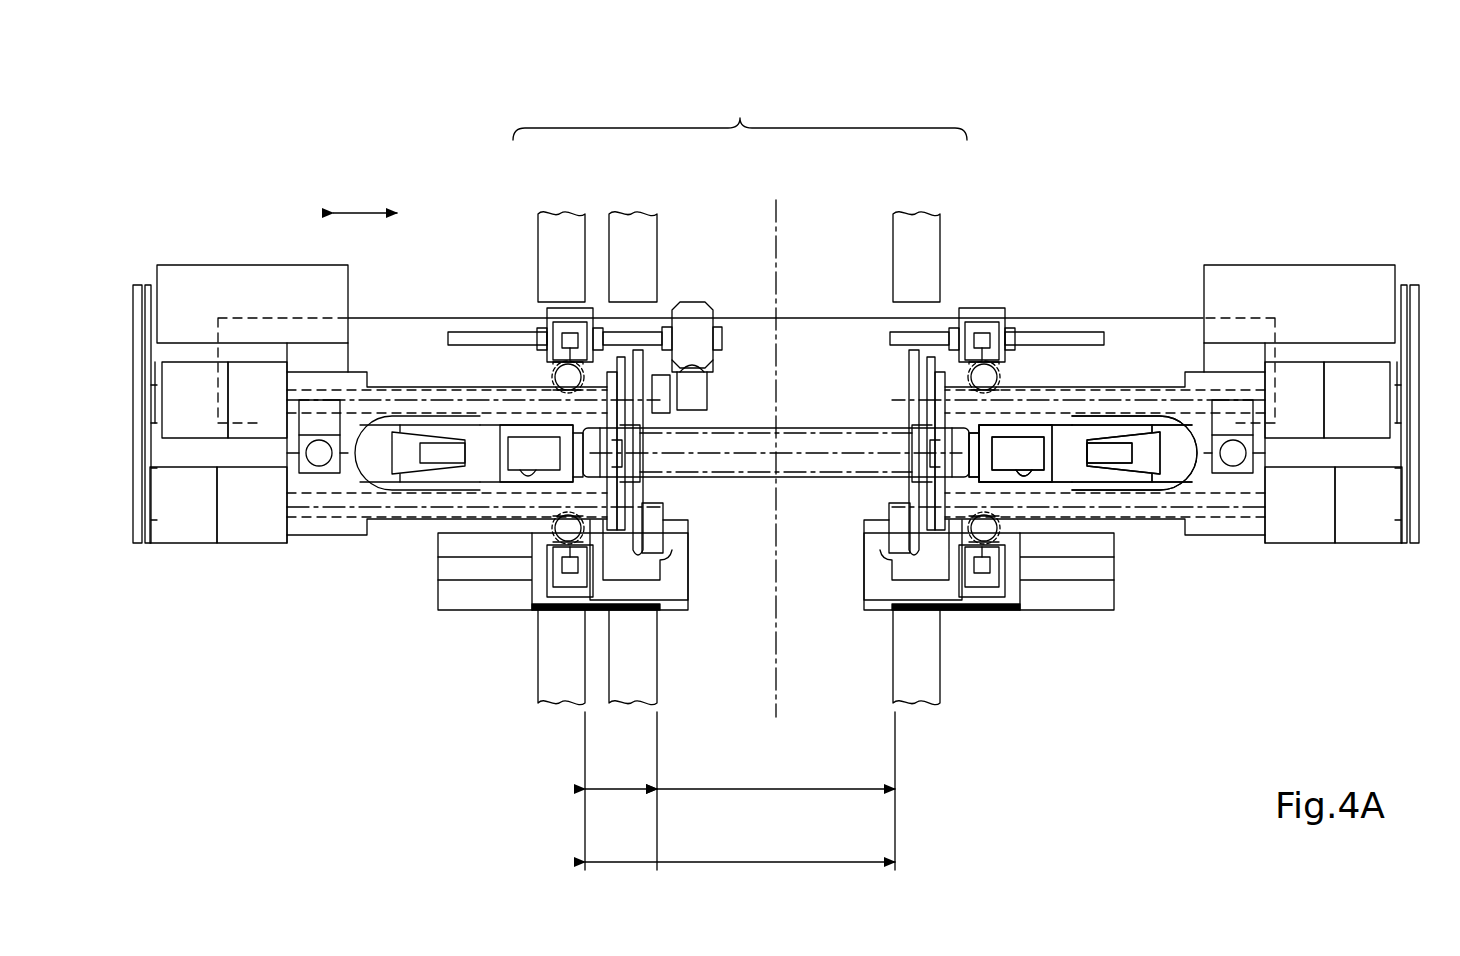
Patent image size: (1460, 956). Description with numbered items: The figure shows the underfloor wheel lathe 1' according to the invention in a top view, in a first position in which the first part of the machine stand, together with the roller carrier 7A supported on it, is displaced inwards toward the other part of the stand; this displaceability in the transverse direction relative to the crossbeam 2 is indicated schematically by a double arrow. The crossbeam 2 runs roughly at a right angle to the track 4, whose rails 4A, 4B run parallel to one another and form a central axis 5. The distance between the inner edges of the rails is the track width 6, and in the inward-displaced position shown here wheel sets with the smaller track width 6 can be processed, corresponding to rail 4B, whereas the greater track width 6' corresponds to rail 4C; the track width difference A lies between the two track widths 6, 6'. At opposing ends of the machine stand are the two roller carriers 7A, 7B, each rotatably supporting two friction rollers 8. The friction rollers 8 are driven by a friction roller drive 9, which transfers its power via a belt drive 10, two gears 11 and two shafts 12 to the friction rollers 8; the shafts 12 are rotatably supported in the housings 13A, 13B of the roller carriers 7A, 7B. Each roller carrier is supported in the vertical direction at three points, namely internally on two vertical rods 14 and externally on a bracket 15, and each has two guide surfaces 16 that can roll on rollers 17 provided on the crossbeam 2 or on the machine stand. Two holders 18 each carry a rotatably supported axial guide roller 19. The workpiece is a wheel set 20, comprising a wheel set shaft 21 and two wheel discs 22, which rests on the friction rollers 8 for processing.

The underfloor wheel lathe 1' is at (1245, 73).
The crossbeam 2 is at (393, 333).
The track 4 is at (740, 118).
The rail 4A is at (917, 227).
The rail 4B is at (633, 227).
The rail 4C is at (561, 227).
The central axis 5 is at (776, 228).
The track width 6 is at (740, 791).
The track width 6' is at (740, 837).
The track width difference A is at (623, 787).
The roller carrier 7A is at (326, 555).
The roller carrier 7B is at (1136, 555).
The friction rollers 8 is at (628, 440).
The friction roller drive 9 is at (205, 283).
The belt drive 10 is at (150, 365).
The gears 11 is at (195, 415).
The shafts 12 is at (418, 395).
The housing 13A is at (347, 483).
The housing 13B is at (1207, 483).
The vertical rods 14 is at (560, 378).
The bracket 15 is at (320, 460).
The guide surfaces 16 is at (993, 362).
The rollers 17 is at (980, 333).
The holders 18 is at (692, 305).
The axial guide roller 19 is at (660, 393).
The wheel set 20 is at (790, 425).
The wheel set shaft 21 is at (826, 440).
The wheel discs 22 is at (627, 538).